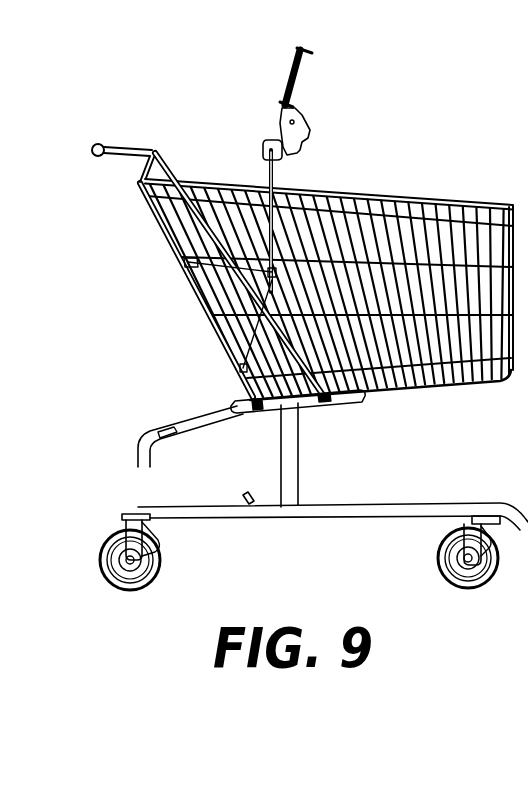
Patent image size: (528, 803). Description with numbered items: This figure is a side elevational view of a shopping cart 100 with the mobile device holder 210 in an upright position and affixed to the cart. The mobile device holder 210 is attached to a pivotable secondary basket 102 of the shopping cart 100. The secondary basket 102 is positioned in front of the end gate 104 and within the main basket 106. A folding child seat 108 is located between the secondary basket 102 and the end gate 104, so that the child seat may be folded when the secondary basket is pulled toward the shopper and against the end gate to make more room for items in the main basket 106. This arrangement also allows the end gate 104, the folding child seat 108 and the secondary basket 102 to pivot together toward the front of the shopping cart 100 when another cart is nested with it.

The shopping cart 100 is at (309, 341).
The secondary basket 102 is at (283, 181).
The end gate 104 is at (140, 177).
The main basket 106 is at (440, 206).
The folding child seat 108 is at (203, 262).
The mobile device holder 210 is at (328, 107).